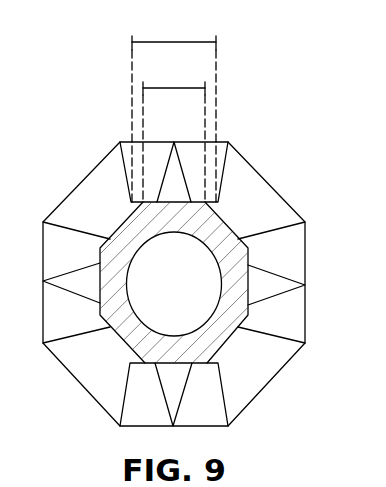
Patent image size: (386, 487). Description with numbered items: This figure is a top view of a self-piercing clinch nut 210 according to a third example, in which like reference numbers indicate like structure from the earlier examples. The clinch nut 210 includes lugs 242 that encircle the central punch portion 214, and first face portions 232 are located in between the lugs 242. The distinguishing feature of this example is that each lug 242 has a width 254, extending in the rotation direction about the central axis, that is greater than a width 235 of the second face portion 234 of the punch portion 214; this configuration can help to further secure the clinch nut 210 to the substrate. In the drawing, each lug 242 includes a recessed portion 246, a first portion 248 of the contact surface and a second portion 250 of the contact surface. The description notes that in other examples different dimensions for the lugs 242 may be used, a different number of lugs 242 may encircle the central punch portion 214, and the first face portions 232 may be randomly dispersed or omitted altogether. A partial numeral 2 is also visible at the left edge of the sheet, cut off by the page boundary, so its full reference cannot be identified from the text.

The self-piercing clinch nut 210 is at (268, 140).
The central punch portion 214 is at (226, 224).
The first face portion 232 is at (94, 284).
The second face portion 234 is at (237, 333).
The width of the second face portion 235 is at (176, 87).
The lug 242 is at (118, 143).
The recessed portion 246 is at (260, 281).
The first portion of the contact surface 248 is at (283, 316).
The second portion of the contact surface 250 is at (288, 248).
The width of the lug 254 is at (174, 41).
The partial numeral (cut off at page edge) 2 is at (20, 167).